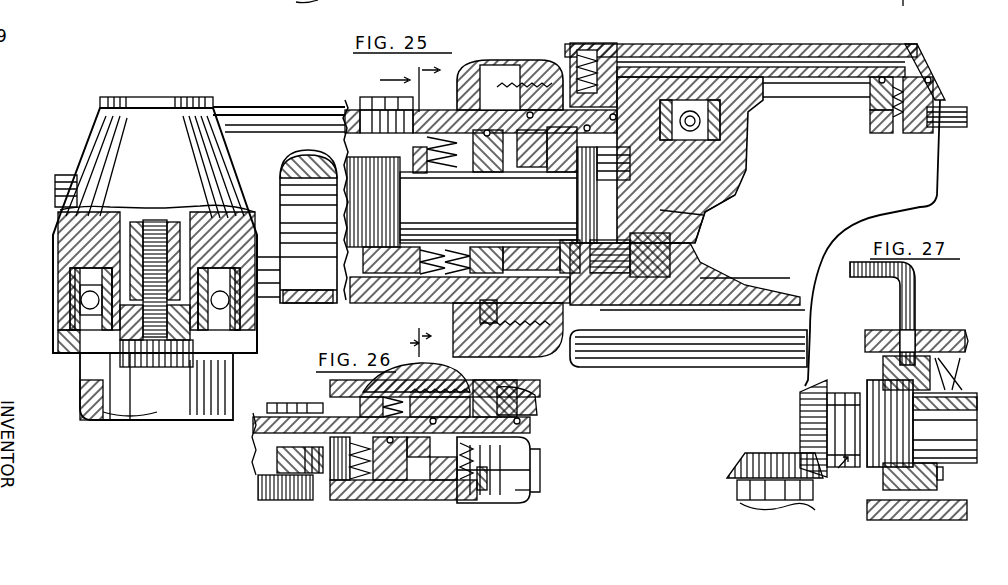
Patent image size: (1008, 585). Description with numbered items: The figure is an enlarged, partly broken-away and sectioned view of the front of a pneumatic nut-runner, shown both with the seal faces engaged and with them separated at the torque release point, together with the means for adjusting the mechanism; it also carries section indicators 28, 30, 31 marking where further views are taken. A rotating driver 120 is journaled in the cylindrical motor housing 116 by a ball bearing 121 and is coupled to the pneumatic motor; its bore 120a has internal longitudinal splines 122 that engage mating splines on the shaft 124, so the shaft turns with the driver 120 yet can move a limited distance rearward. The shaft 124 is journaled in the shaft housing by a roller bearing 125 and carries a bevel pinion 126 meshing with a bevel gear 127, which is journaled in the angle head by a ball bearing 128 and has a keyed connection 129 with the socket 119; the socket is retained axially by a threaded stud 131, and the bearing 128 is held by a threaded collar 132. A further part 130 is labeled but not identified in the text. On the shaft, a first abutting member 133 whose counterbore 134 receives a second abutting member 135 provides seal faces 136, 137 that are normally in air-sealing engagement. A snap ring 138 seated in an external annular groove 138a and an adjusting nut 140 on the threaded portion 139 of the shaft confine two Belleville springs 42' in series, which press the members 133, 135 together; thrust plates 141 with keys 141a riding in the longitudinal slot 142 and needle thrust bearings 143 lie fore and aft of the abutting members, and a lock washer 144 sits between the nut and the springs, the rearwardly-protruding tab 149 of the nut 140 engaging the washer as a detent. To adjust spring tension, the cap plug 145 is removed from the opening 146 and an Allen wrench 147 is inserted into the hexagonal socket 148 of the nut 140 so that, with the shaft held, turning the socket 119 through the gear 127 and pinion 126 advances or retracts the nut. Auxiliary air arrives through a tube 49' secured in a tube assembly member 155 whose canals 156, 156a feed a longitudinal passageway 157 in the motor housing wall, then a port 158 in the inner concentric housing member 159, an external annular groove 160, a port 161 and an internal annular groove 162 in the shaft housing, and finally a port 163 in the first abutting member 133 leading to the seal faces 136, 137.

In FIG. 25, the cylindrical motor housing 116 is at (314, 0).
In FIG. 25, the section line 28 is at (904, 16).
In FIG. 25, the section line 30 is at (383, 212).
In FIG. 25, the section line 31 is at (443, 203).
In FIG. 25, the socket 119 is at (120, 422).
In FIG. 25, the driver 120 is at (717, 167).
In FIG. 25, the bore 120a is at (720, 177).
In FIG. 25, the ball bearing 121 is at (718, 172).
In FIG. 25, the internal longitudinal splines 122 is at (710, 182).
In FIG. 25, the shaft 124 is at (525, 215).
In FIG. 27, the shaft 124 is at (955, 455).
In FIG. 25, the roller bearing 125 is at (322, 290).
In FIG. 25, the bevel pinion 126 is at (195, 206).
In FIG. 27, the bevel pinion 126 is at (800, 417).
In FIG. 25, the bevel gear 127 is at (83, 263).
In FIG. 27, the bevel gear 127 is at (737, 470).
In FIG. 25, the ball bearing 128 is at (80, 304).
In FIG. 25, the keyed connection 129 is at (163, 205).
In FIG. 25, the gear housing 130 is at (100, 214).
In FIG. 25, the threaded stud 131 is at (82, 383).
In FIG. 25, the threaded collar 132 is at (74, 356).
In FIG. 25, the first abutting member 133 is at (420, 278).
In FIG. 25, the counterbore 134 is at (480, 300).
In FIG. 25, the second abutting member 135 is at (527, 330).
In FIG. 26, the second abutting member 135 is at (465, 470).
In FIG. 26, the seal face 136 is at (375, 386).
In FIG. 26, the seal face 137 is at (538, 446).
In FIG. 25, the snap ring 138 is at (566, 228).
In FIG. 26, the snap ring 138 is at (523, 487).
In FIG. 26, the external annular groove 138a is at (520, 490).
In FIG. 26, the threaded portion 139 is at (258, 488).
In FIG. 27, the threaded portion 139 is at (865, 365).
In FIG. 26, the adjusting nut 140 is at (277, 453).
In FIG. 27, the adjusting nut 140 is at (883, 363).
In FIG. 26, the thrust plates 141 is at (330, 506).
In FIG. 25, the keys 141a is at (455, 192).
In FIG. 26, the longitudinal slot 142 is at (430, 470).
In FIG. 26, the needle thrust bearings 143 is at (365, 413).
In FIG. 25, the lock washer 144 is at (385, 306).
In FIG. 25, the cap plug 145 is at (360, 104).
In FIG. 26, the cap plug 145 is at (283, 403).
In FIG. 27, the opening 146 is at (923, 330).
In FIG. 27, the Allen wrench 147 is at (917, 297).
In FIG. 25, the hexagonal socket 148 is at (345, 133).
In FIG. 27, the rearwardly-protruding tab 149 is at (967, 350).
In FIG. 25, the tube assembly member 155 is at (937, 100).
In FIG. 25, the canal 156 is at (917, 128).
In FIG. 25, the canal 156a is at (907, 107).
In FIG. 25, the longitudinal passageway 157 is at (525, 62).
In FIG. 25, the port 158 is at (603, 80).
In FIG. 26, the port 158 is at (540, 400).
In FIG. 25, the inner concentric housing member 159 is at (540, 93).
In FIG. 25, the external annular groove 160 is at (610, 306).
In FIG. 26, the external annular groove 160 is at (537, 405).
In FIG. 26, the port 161 is at (530, 423).
In FIG. 25, the internal annular groove 162 is at (613, 291).
In FIG. 26, the internal annular groove 162 is at (520, 427).
In FIG. 25, the port 163 is at (497, 190).
In FIG. 25, the Belleville springs 42' is at (416, 291).
In FIG. 27, the Belleville springs 42' is at (969, 374).
In FIG. 25, the tube 49' is at (958, 99).